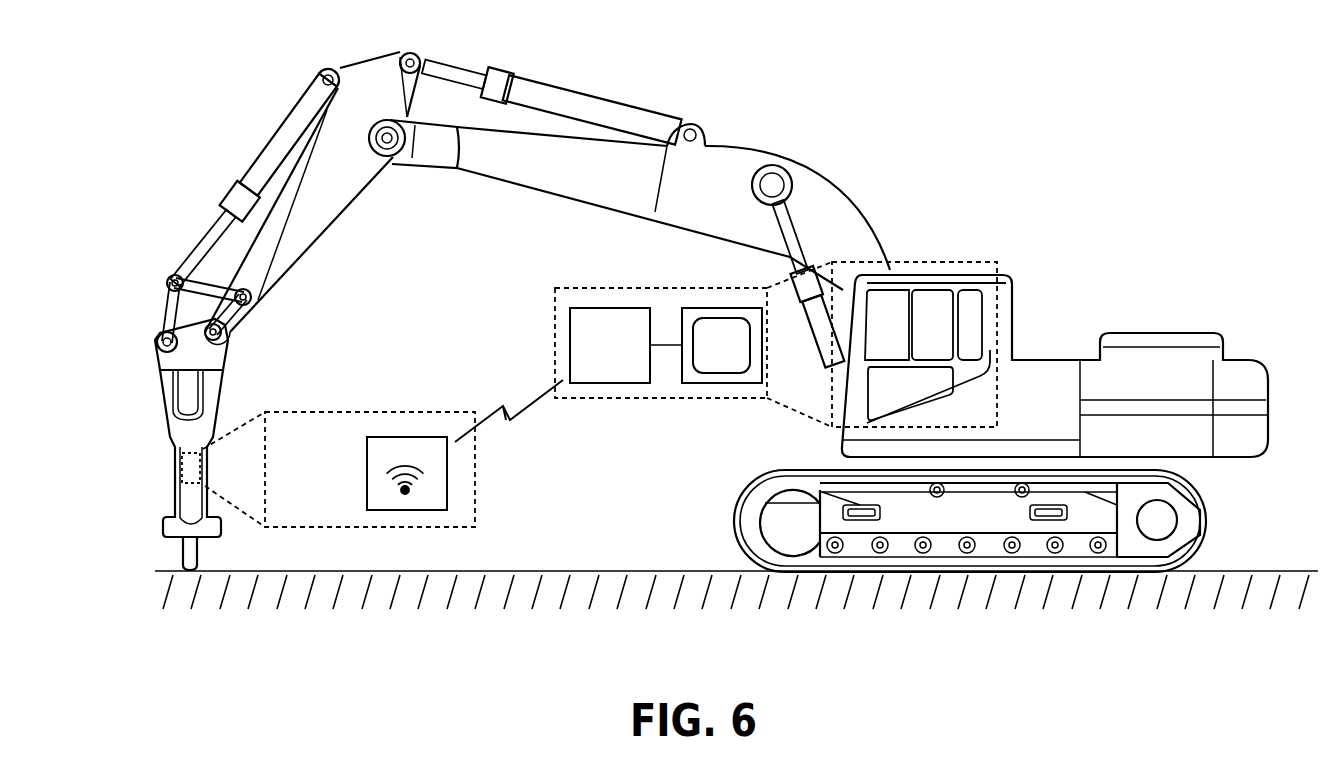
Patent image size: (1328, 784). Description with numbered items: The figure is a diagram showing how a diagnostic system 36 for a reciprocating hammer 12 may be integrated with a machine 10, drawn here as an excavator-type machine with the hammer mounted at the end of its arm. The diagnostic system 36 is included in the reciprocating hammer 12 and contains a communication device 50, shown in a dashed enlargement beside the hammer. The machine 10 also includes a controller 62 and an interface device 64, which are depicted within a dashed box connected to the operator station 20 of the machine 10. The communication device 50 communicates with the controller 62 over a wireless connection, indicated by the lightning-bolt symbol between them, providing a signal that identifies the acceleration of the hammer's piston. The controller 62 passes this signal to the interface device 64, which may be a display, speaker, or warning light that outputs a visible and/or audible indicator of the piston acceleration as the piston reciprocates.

The machine 10 is at (1153, 236).
The reciprocating hammer 12 is at (142, 417).
The operator station 20 is at (936, 300).
The diagnostic system 36 is at (172, 465).
The communication device 50 is at (357, 478).
The controller 62 is at (624, 358).
The interface device 64 is at (735, 358).